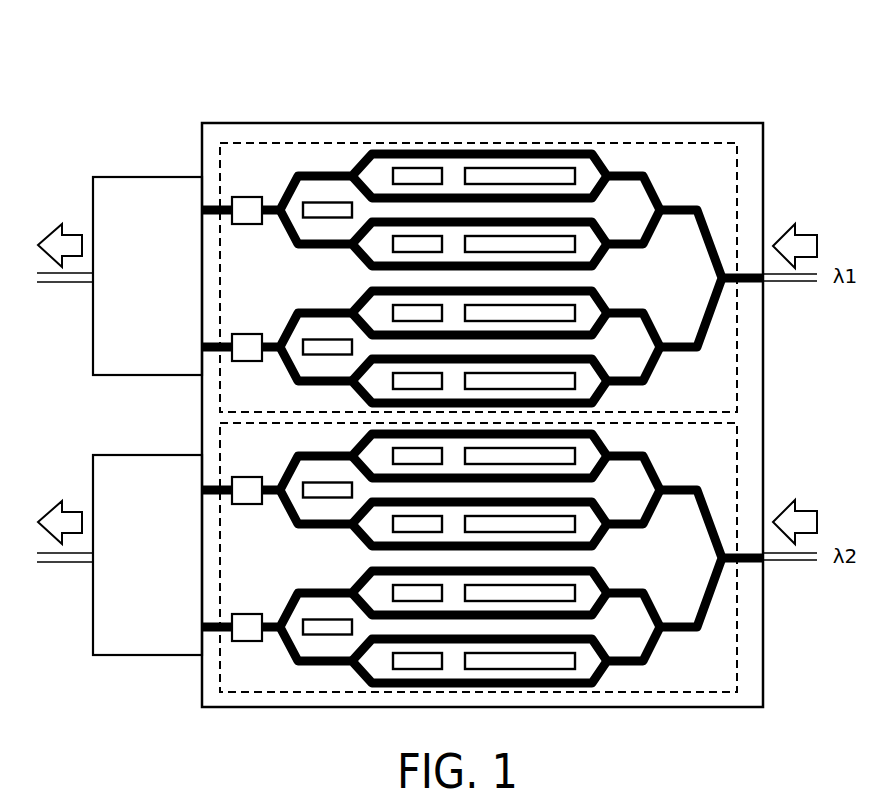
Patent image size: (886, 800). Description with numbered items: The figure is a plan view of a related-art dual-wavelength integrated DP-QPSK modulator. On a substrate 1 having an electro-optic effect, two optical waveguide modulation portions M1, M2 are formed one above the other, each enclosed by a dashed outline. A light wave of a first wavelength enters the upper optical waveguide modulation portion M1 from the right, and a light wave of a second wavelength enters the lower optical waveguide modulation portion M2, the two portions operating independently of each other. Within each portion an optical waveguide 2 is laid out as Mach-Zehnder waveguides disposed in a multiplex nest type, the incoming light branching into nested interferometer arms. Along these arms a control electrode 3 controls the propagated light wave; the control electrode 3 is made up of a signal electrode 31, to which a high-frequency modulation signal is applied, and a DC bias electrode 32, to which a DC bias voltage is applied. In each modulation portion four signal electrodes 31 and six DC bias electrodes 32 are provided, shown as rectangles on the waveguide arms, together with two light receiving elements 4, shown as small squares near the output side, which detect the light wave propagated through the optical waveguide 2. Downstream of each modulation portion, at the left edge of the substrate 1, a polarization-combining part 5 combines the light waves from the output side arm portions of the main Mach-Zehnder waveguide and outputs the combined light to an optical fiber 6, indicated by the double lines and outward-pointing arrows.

The substrate 1 is at (737, 130).
The optical waveguide 2 is at (718, 217).
The control electrode 3 is at (300, 57).
The signal electrode 31 is at (583, 118).
The DC bias electrode 32 is at (355, 118).
The light receiving element 4 is at (265, 118).
The polarization-combining part 5 is at (120, 180).
The optical fiber 6 is at (55, 284).
The optical waveguide modulation portion M1 is at (737, 380).
The optical waveguide modulation portion M2 is at (737, 650).